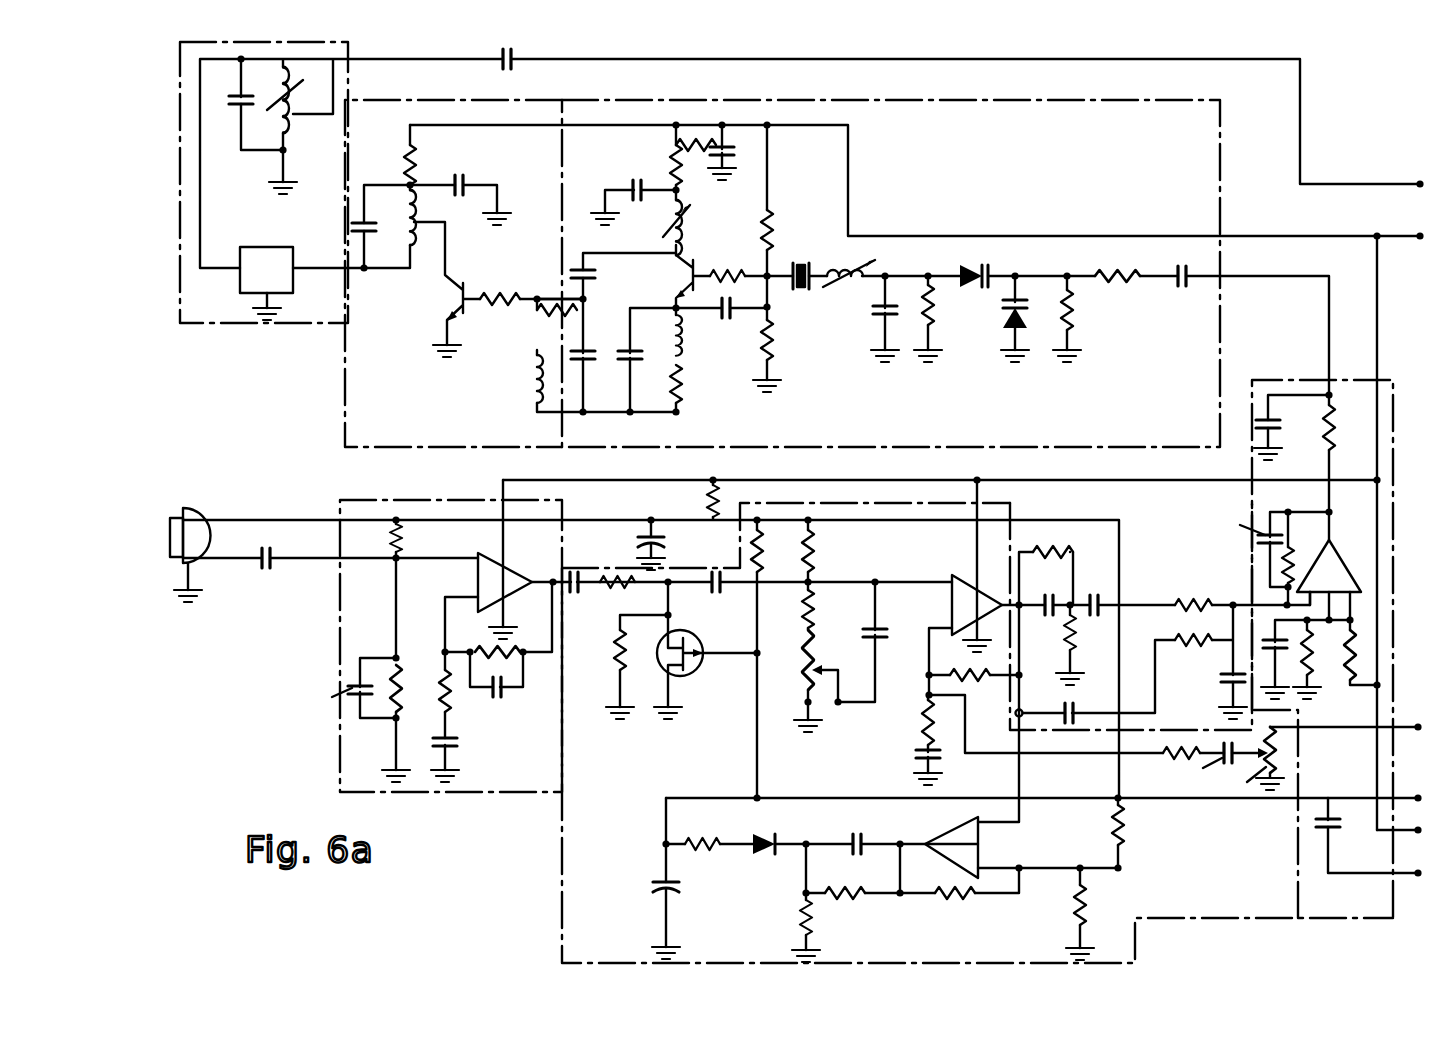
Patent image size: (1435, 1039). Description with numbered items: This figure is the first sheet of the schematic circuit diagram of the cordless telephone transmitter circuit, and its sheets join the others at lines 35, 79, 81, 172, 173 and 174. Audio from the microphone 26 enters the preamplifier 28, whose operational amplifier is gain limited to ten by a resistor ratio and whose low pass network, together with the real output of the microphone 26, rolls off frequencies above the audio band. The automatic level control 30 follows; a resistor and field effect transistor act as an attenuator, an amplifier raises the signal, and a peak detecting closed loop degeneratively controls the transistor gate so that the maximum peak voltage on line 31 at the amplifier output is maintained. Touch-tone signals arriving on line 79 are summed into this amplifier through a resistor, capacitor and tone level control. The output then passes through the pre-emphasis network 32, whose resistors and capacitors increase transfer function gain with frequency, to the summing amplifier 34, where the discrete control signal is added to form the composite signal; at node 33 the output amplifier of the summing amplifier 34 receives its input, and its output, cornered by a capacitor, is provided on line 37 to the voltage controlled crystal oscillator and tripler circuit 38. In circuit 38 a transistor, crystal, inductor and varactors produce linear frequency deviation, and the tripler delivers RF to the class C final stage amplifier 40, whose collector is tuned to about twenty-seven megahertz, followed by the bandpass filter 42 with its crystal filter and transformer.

The microphone 26 is at (193, 508).
The preamplifier 28 is at (340, 652).
The automatic level control 30 is at (560, 825).
The line 31 is at (1001, 597).
The pre-emphasis network 32 is at (1045, 503).
The junction 33 is at (1267, 605).
The summing amplifier 34 is at (1300, 378).
The line 35 is at (1413, 875).
The line 37 is at (1257, 276).
The voltage controlled crystal oscillator and tripler circuit 38 is at (957, 102).
The final stage amplifier 40 is at (343, 363).
The bandpass filter 42 is at (178, 273).
The line 79 is at (1400, 722).
The line 81 is at (1397, 797).
The line 172 is at (1385, 184).
The line 173 is at (1400, 233).
The line 174 is at (1370, 823).